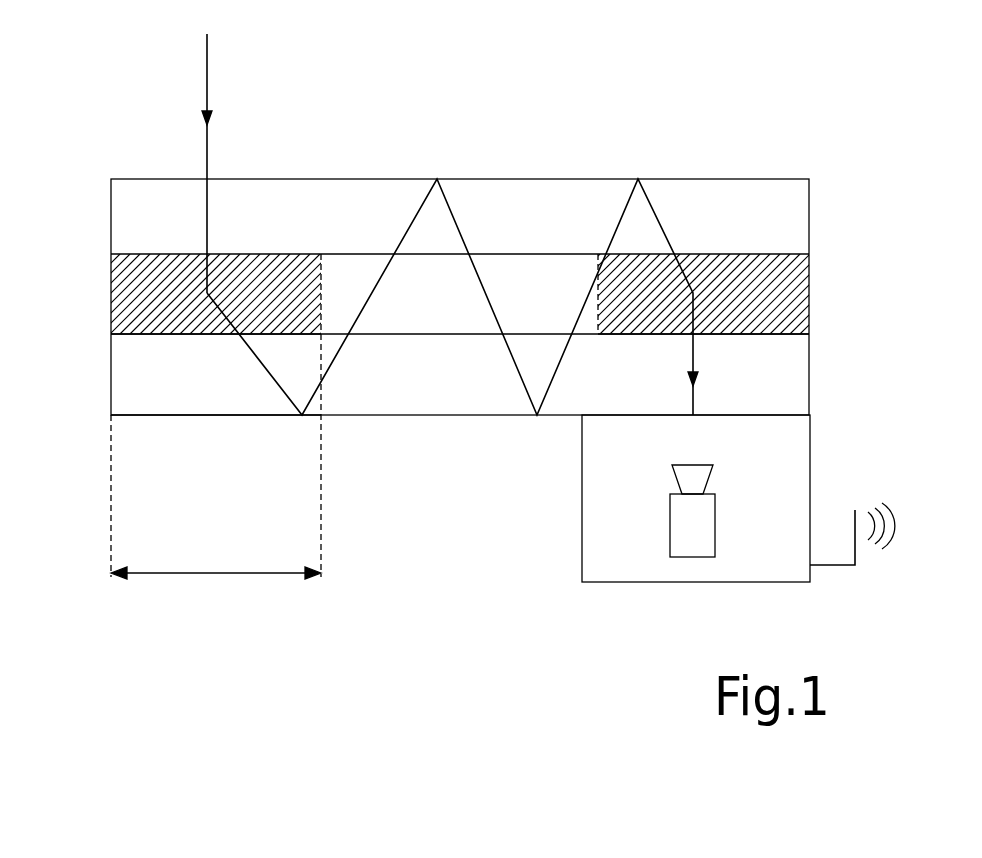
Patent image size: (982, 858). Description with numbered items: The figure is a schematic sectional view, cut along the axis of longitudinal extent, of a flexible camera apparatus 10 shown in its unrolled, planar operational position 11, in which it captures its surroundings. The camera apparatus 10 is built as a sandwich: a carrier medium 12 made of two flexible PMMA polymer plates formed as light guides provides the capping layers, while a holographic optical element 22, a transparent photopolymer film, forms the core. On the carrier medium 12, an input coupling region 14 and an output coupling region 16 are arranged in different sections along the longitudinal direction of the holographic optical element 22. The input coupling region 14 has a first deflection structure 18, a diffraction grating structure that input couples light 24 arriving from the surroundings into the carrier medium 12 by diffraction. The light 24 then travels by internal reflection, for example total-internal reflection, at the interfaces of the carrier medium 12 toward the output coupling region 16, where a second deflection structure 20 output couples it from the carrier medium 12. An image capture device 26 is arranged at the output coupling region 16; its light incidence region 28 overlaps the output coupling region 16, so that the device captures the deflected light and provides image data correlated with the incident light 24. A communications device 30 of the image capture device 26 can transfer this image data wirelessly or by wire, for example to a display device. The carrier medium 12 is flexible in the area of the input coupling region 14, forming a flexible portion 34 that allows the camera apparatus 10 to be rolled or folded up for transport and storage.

The camera apparatus 10 is at (745, 114).
The operational position 11 is at (205, 415).
The carrier medium 12 is at (787, 179).
The input coupling region 14 is at (111, 290).
The output coupling region 16 is at (810, 288).
The first deflection structure 18 is at (176, 334).
The second deflection structure 20 is at (743, 334).
The holographic optical element 22 is at (437, 334).
The light 24 is at (207, 62).
The image capture device 26 is at (810, 460).
The light incidence region 28 is at (633, 415).
The communications device 30 is at (835, 565).
The flexible portion 34 is at (218, 577).